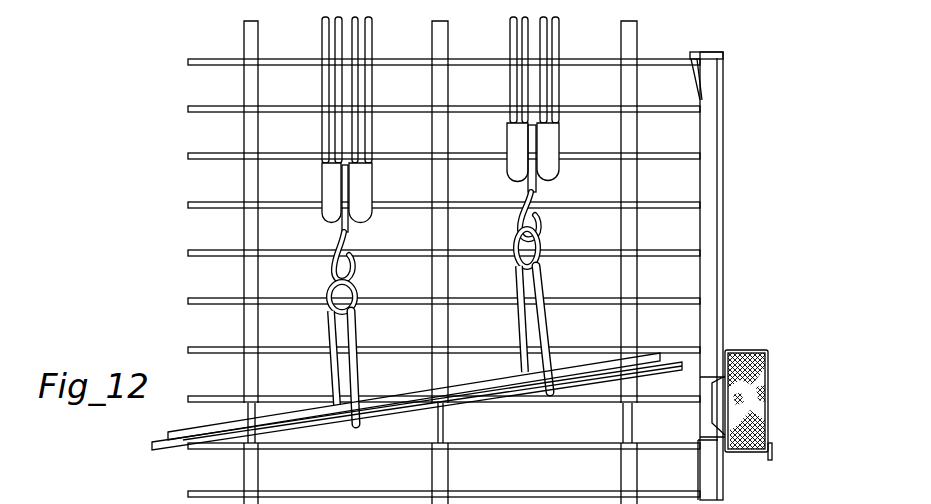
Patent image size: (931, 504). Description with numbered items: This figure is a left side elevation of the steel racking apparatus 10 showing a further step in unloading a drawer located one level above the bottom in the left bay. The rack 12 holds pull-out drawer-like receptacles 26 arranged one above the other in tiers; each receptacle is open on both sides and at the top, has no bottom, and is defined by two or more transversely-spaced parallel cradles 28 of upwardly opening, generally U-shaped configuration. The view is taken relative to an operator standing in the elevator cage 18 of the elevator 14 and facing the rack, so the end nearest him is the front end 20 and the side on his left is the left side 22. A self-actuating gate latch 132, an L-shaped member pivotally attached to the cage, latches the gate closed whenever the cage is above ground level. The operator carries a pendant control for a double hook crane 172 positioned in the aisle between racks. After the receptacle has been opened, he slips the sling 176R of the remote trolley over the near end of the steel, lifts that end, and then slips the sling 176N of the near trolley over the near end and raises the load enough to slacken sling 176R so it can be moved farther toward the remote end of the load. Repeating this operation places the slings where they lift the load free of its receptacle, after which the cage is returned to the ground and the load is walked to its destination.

The steel racking apparatus 10 is at (675, 42).
The rack 12 is at (228, 42).
The elevator 14 is at (772, 382).
The elevator cage 18 is at (758, 412).
The front end 20 is at (700, 240).
The left side 22 is at (467, 149).
The drawer-like receptacle 26 is at (252, 430).
The cradle 28 is at (455, 418).
The gate latch 132 is at (775, 456).
The double hook crane 172 is at (363, 190).
The sling of the remote trolley 176R is at (357, 332).
The sling of the near trolley 176N is at (548, 290).